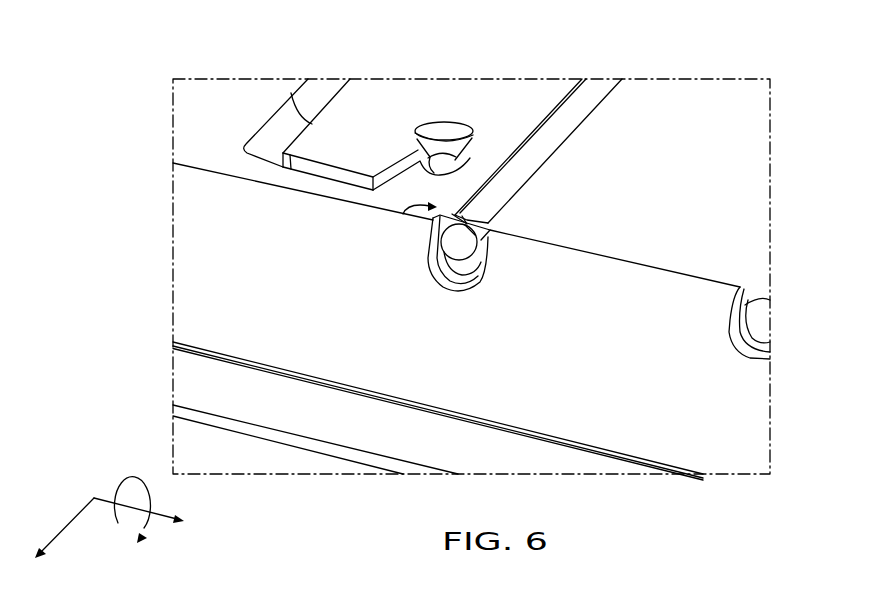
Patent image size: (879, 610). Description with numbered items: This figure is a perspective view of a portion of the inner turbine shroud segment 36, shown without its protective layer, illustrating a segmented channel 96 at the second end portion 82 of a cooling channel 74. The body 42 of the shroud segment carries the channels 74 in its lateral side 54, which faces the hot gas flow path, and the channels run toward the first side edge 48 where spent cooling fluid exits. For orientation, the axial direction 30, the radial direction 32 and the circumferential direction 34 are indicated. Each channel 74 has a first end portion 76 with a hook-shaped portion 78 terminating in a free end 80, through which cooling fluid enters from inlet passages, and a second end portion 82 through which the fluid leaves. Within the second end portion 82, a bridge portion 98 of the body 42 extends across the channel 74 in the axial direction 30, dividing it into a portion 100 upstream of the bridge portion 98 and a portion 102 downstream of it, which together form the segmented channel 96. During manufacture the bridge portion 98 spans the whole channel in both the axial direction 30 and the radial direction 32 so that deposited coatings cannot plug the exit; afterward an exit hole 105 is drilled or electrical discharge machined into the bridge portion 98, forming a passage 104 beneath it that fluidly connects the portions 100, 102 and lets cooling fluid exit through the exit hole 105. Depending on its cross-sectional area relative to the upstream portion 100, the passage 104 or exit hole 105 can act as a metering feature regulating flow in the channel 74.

The axial direction 30 is at (157, 518).
The radial direction 32 is at (70, 525).
The circumferential direction 34 is at (130, 478).
The inner turbine shroud segment 36 is at (333, 343).
The body 42 is at (370, 353).
The first side edge 48 is at (292, 337).
The lateral side 54 is at (658, 98).
The channel 74 is at (298, 176).
The first end portion 76 is at (338, 187).
The hook-shaped portion 78 is at (363, 192).
The free end 80 is at (442, 137).
The second end portion 82 is at (493, 203).
The segmented channel 96 is at (403, 214).
The bridge portion 98 is at (455, 216).
The portion of the channel upstream of the bridge portion 100 is at (480, 207).
The portion of the channel downstream of the bridge portion 102 is at (460, 280).
The passage 104 is at (470, 237).
The exit hole 105 is at (448, 262).